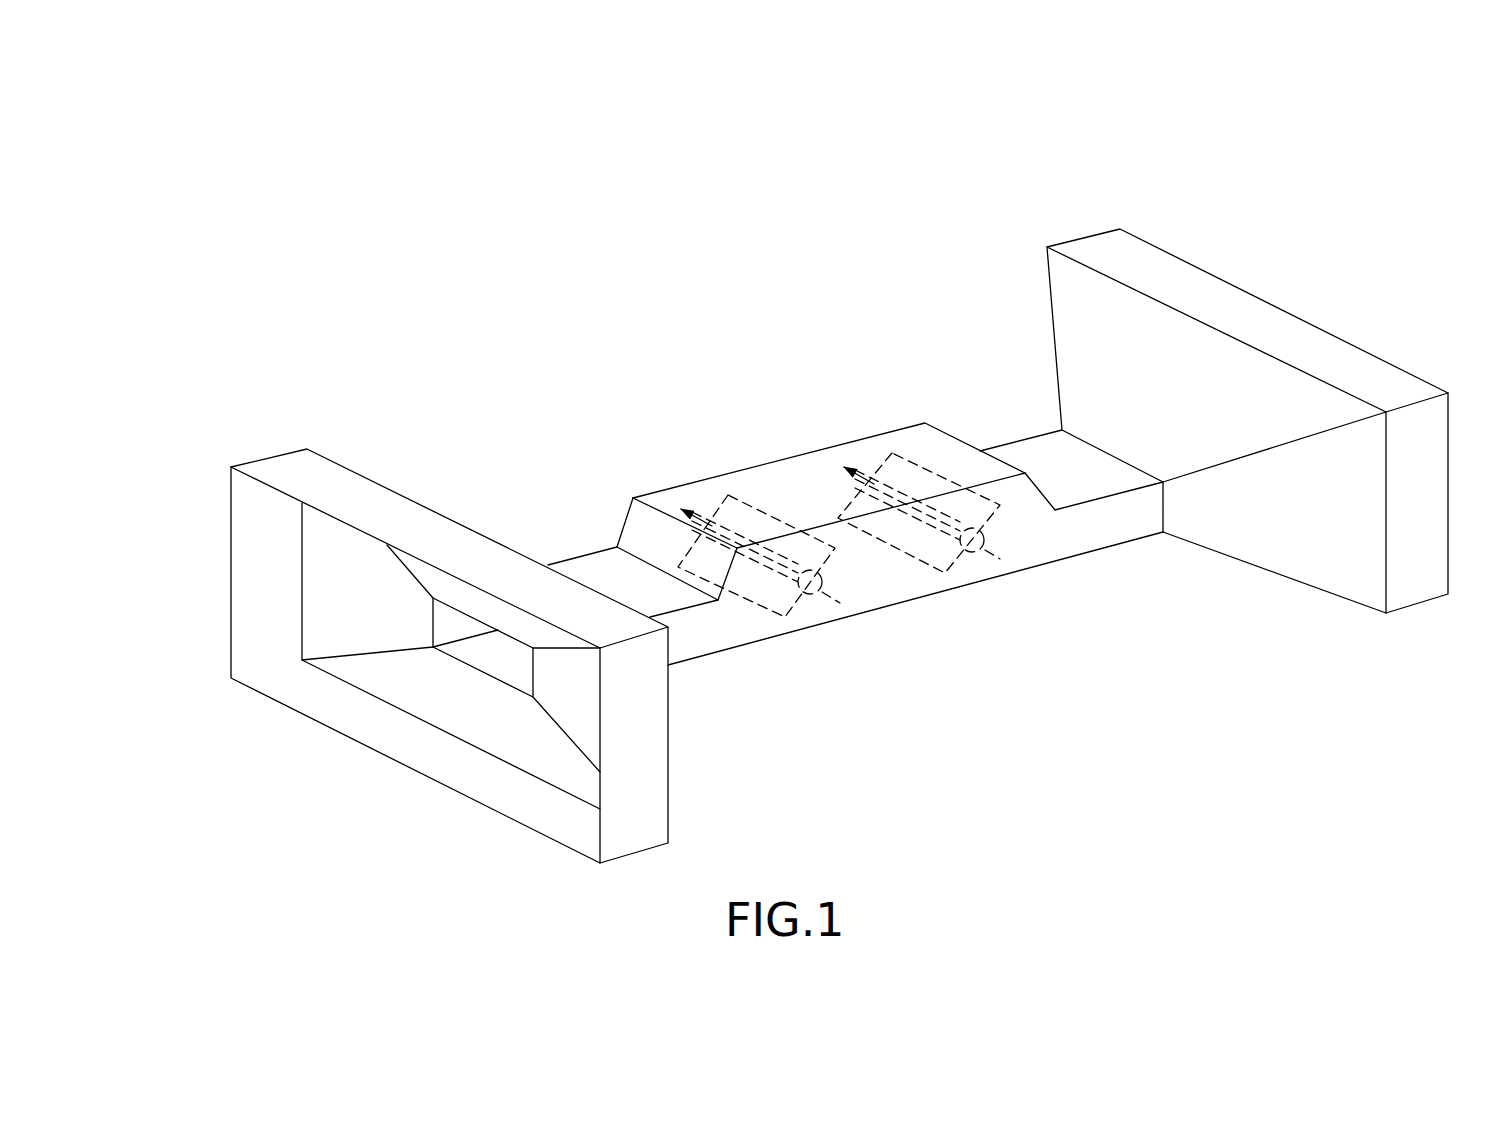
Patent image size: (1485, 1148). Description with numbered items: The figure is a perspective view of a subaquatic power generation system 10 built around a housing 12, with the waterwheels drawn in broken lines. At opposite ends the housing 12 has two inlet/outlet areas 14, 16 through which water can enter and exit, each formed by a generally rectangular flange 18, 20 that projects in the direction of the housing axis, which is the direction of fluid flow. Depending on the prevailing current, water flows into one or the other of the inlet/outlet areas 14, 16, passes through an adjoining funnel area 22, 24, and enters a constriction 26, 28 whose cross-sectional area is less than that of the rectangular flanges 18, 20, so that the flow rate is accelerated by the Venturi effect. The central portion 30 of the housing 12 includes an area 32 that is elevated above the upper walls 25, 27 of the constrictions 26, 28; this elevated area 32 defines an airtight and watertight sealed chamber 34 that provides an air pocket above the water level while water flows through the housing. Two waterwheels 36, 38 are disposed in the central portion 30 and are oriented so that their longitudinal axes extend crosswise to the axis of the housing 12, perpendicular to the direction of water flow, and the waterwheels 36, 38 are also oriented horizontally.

The subaquatic power generation system 10 is at (810, 183).
The housing 12 is at (813, 343).
The inlet/outlet area 14 is at (228, 545).
The inlet/outlet area 16 is at (1292, 292).
The rectangular flange 18 is at (279, 470).
The rectangular flange 20 is at (1108, 248).
The funnel area 22 is at (435, 700).
The funnel area 24 is at (1067, 317).
The upper wall 25 is at (598, 575).
The constriction 26 is at (687, 637).
The upper wall 27 is at (1040, 453).
The constriction 28 is at (1108, 523).
The central portion 30 is at (878, 585).
The elevated area 32 is at (645, 532).
The sealed chamber 34 is at (833, 532).
The waterwheel 36 is at (762, 596).
The waterwheel 38 is at (925, 578).